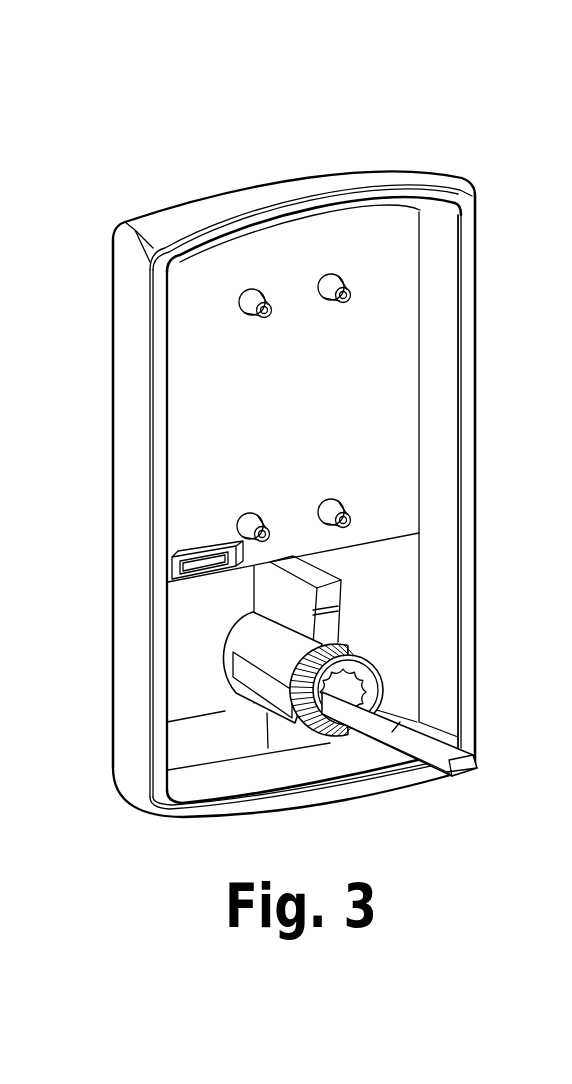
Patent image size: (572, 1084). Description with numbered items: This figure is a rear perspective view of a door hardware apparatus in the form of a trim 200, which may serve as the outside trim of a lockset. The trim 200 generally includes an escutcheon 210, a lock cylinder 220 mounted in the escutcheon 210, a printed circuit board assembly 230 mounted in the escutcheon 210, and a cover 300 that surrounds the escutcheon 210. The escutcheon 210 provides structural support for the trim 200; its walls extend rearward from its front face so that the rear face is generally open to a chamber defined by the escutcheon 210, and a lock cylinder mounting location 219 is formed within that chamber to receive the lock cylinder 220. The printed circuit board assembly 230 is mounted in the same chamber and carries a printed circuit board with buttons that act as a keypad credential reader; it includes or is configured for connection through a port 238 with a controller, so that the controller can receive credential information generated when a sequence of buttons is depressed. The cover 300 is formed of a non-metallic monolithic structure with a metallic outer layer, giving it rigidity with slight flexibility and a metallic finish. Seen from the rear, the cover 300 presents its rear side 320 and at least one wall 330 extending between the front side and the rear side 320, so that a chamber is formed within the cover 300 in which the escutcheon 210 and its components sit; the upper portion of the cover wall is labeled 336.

The trim 200 is at (145, 128).
The cover 300 is at (112, 297).
The top wall of housing 336 is at (243, 197).
The wall 330 is at (126, 410).
The rear side 320 is at (497, 315).
The escutcheon 210 is at (432, 372).
The printed circuit board assembly 230 is at (392, 458).
The port 238 is at (190, 530).
The lock cylinder 220 is at (403, 634).
The lock cylinder mounting location 219 is at (222, 705).